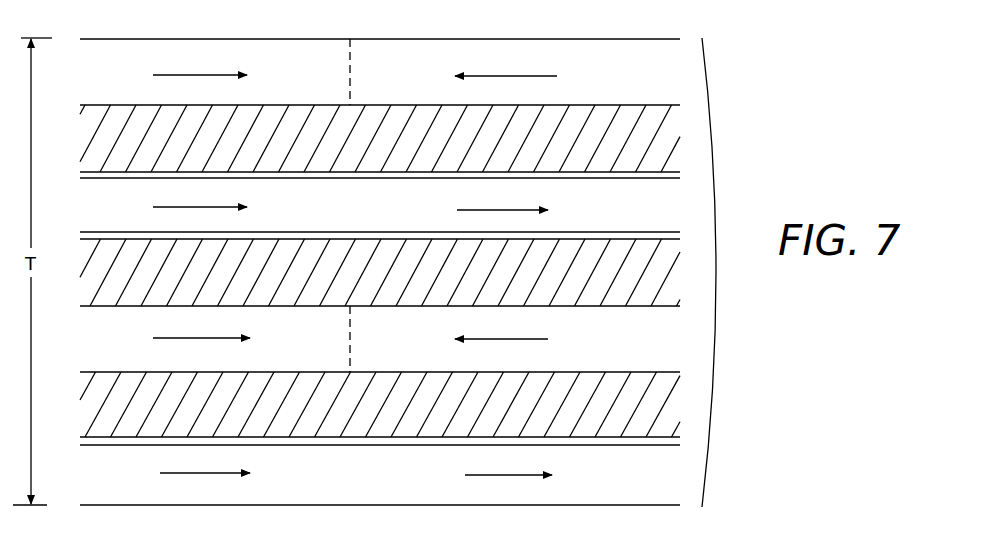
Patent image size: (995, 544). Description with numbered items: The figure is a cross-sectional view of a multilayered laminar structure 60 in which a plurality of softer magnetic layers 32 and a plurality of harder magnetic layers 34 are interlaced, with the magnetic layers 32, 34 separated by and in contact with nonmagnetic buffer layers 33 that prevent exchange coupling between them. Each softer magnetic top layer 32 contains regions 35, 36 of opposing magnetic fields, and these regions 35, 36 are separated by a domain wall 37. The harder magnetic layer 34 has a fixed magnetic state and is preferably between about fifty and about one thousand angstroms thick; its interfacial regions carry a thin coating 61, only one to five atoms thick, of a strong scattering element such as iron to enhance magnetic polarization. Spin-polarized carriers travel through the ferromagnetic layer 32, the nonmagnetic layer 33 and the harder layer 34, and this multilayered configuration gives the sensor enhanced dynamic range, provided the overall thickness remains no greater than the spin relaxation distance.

The soft magnetic top layer 32 is at (118, 77).
The nonmagnetic conductive metal layer 33 is at (118, 149).
The bottom layer 34 is at (123, 216).
The region 35 is at (317, 77).
The region 36 is at (393, 98).
The domain wall 37 is at (350, 52).
The laminar structure 60 is at (725, 272).
The thin coating 61 is at (680, 175).